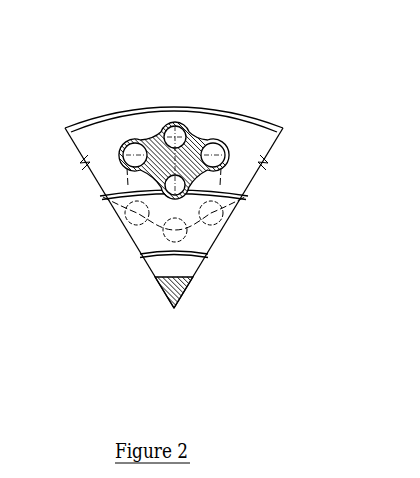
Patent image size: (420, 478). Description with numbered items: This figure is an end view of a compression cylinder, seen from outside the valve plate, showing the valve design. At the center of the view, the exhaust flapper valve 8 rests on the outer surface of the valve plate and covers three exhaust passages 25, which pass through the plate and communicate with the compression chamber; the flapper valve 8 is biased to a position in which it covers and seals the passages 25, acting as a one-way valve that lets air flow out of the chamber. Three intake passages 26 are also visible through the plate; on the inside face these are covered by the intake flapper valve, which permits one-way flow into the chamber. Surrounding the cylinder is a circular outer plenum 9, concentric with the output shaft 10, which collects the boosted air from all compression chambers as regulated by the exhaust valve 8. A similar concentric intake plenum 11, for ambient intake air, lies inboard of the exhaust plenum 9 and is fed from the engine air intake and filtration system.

The exhaust passages 25 is at (212, 148).
The exhaust flapper valve 8 is at (177, 126).
The circular outer plenum 9 is at (255, 143).
The concentric intake plenum 11 is at (231, 205).
The intake passages 26 is at (136, 214).
The output shaft 10 is at (178, 287).